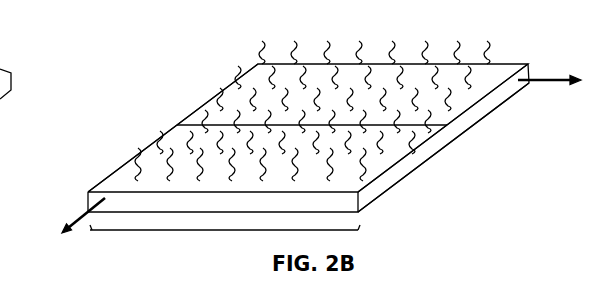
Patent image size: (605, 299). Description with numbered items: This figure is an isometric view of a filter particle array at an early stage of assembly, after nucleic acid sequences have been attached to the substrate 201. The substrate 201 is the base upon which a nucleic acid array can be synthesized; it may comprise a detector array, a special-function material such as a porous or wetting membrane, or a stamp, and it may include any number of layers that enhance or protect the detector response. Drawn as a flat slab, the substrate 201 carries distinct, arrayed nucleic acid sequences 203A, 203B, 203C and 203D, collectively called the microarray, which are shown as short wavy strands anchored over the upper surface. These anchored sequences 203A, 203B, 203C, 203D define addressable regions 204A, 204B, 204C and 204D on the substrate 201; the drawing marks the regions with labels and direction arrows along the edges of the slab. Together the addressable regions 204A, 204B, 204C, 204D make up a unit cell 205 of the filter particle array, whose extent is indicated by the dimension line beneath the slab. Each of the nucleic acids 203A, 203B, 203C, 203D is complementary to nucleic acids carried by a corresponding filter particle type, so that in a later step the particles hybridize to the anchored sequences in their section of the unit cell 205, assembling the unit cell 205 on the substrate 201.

The substrate 201 is at (88, 196).
The nucleic acid sequence 203A is at (264, 56).
The nucleic acid sequence 203B is at (440, 97).
The nucleic acid sequence 203C is at (156, 136).
The nucleic acid sequence 203D is at (360, 165).
The addressable region 204A is at (205, 100).
The addressable region 204B is at (478, 88).
The addressable region 204C is at (103, 182).
The addressable region 204D is at (400, 148).
The unit cell 205 is at (223, 231).